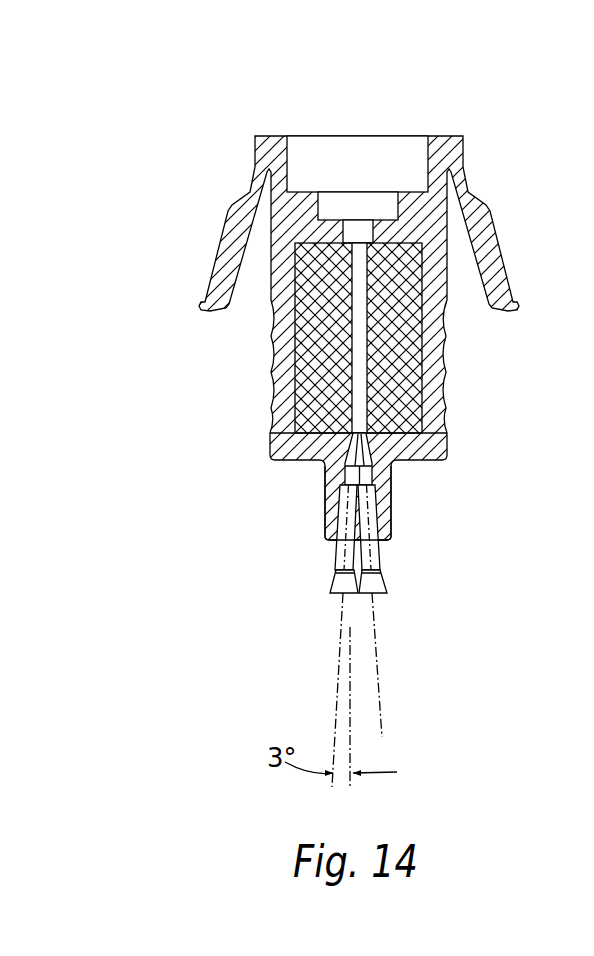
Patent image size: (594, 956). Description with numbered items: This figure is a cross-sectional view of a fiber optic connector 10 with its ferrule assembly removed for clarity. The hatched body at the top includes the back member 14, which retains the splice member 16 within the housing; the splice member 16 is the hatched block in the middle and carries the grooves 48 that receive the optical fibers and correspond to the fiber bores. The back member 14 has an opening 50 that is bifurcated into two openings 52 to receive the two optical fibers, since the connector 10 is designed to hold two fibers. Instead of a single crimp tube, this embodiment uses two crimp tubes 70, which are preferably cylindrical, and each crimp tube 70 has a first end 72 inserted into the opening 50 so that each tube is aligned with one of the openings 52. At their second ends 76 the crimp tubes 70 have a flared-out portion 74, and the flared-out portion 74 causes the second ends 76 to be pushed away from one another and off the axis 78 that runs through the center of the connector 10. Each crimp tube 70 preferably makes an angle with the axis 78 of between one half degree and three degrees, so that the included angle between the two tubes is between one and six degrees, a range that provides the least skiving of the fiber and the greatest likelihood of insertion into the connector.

The fiber optic connector 10 is at (532, 165).
The back member 14 is at (390, 500).
The splice member 16 is at (410, 352).
The grooves 48 is at (363, 397).
The opening 50 is at (333, 543).
The openings 52 is at (380, 453).
The crimp tubes 70 is at (380, 550).
The first end 72 is at (337, 490).
The flared-out portion 74 is at (387, 582).
The second end 76 is at (322, 592).
The axis 78 is at (350, 743).